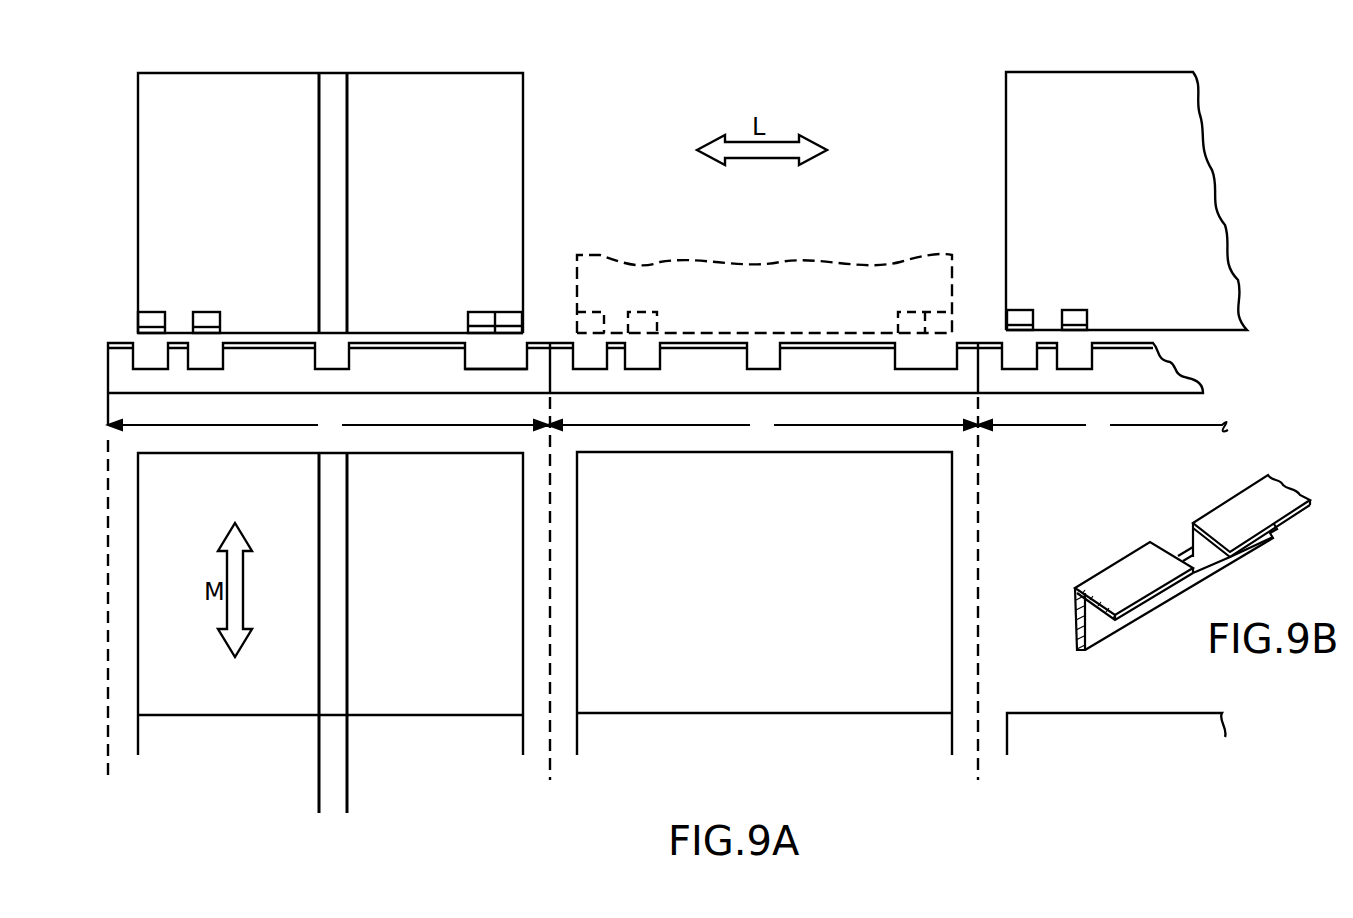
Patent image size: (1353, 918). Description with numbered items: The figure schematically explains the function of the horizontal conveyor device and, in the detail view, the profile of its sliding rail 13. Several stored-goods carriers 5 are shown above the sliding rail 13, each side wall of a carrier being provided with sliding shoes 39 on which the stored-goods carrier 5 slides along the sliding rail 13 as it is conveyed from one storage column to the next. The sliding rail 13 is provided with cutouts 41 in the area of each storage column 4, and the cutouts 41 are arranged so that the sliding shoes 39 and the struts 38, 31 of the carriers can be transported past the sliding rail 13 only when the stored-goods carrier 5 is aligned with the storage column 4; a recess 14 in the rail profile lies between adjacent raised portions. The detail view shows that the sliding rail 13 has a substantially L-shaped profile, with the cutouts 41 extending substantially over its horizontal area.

In FIG. 9A, the storage column 4 is at (668, 426).
In FIG. 9A, the stored-goods carrier 5 is at (514, 124).
In FIG. 9A, the sliding rail 13 is at (108, 385).
In FIG. 9B, the sliding rail 13 is at (1075, 619).
In FIG. 9A, the recess between tabs 14 is at (493, 362).
In FIG. 9A, the gap 31 is at (332, 86).
In FIG. 9A, the strut 38 is at (354, 415).
In FIG. 9A, the sliding shoe 39 is at (193, 312).
In FIG. 9A, the cutout 41 is at (200, 362).
In FIG. 9B, the cutout 41 is at (1170, 538).